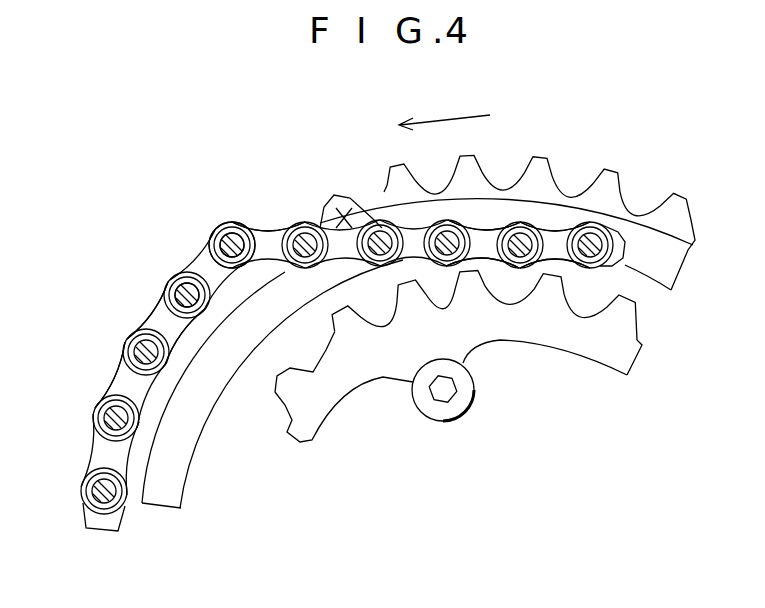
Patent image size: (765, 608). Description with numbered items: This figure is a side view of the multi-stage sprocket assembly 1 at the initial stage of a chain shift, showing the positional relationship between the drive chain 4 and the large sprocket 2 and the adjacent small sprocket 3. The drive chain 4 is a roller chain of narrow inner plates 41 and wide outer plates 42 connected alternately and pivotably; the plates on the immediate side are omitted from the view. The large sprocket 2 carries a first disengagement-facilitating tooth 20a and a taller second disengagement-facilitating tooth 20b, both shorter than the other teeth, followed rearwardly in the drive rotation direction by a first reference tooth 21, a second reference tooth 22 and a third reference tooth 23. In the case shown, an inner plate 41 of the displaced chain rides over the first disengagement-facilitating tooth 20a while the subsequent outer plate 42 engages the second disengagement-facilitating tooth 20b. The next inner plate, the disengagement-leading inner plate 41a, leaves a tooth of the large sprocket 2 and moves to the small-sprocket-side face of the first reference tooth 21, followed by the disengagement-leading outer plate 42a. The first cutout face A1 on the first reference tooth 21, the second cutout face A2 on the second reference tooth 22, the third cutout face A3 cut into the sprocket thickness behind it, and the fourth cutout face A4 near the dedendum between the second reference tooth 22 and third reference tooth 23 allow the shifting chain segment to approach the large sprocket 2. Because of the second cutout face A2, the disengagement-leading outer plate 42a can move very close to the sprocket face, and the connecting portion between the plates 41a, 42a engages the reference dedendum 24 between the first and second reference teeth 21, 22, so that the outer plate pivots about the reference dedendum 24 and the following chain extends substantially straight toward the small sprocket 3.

The multi-stage sprocket assembly 1 is at (633, 157).
The large sprocket 2 is at (667, 277).
The small sprocket 3 is at (600, 347).
The drive chain 4 is at (522, 290).
The first disengagement-facilitating tooth 20a is at (150, 400).
The second disengagement-facilitating tooth 20b is at (160, 313).
The first reference tooth 21 is at (237, 268).
The second reference tooth 22 is at (280, 233).
The third reference tooth 23 is at (339, 200).
The reference dedendum 24 is at (223, 228).
The inner plate 41 is at (487, 237).
The outer plate 42 is at (560, 230).
The disengagement-leading inner plate 41a is at (208, 268).
The disengagement-leading outer plate 42a is at (257, 233).
The first cutout face A1 is at (222, 292).
The second cutout face A2 is at (220, 291).
The third cutout face A3 is at (323, 273).
The fourth cutout face A4 is at (350, 200).